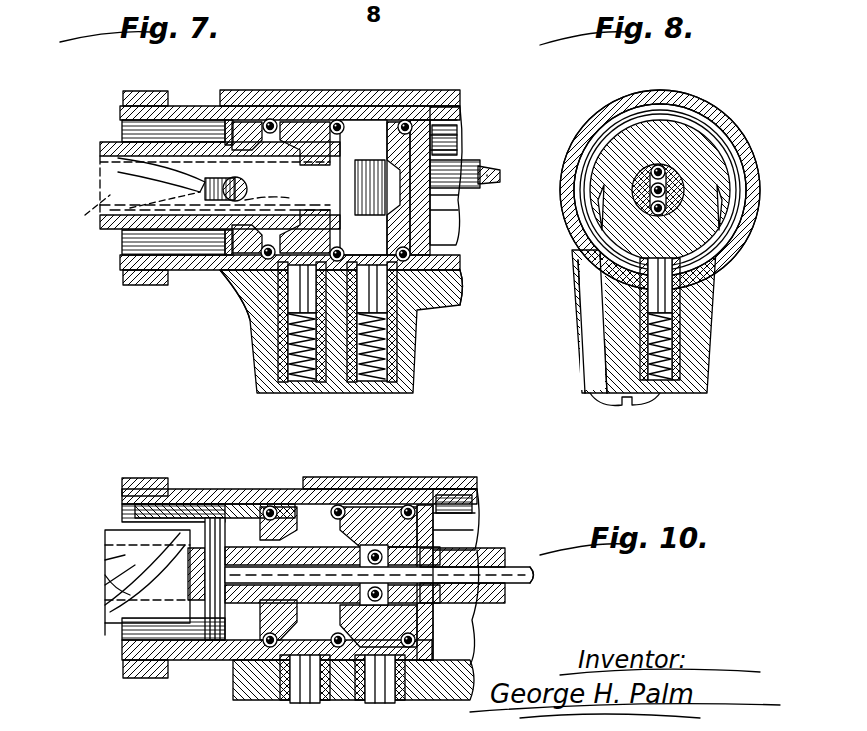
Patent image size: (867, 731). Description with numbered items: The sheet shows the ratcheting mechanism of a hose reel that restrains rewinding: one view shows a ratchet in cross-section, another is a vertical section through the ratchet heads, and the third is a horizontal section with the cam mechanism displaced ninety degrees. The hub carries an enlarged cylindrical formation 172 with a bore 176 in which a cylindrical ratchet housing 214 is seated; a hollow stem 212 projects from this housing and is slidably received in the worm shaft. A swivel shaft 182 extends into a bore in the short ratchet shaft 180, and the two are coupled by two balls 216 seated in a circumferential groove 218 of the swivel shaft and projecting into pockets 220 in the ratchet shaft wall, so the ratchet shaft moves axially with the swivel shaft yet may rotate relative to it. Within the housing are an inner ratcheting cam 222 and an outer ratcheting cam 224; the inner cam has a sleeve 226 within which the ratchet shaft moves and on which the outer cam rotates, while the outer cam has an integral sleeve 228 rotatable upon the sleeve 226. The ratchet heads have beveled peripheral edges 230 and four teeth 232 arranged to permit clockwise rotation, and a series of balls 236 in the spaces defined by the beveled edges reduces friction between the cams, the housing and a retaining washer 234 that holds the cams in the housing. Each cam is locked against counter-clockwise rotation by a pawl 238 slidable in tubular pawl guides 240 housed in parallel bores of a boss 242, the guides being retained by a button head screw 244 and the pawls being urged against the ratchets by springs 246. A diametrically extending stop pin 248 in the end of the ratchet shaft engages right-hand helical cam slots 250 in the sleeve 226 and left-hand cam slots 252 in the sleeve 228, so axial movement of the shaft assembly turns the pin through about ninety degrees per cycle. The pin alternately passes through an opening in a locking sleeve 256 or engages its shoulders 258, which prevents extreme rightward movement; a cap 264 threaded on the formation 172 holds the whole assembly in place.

In FIG. 8, the cylindrical boss or formation 172 is at (640, 97).
In FIG. 10, the cylindrical boss or formation 172 is at (455, 495).
In FIG. 7, the bore 176 is at (462, 120).
In FIG. 10, the bore 176 is at (478, 490).
In FIG. 8, the ratchet shaft 180 is at (705, 235).
In FIG. 10, the ratchet shaft 180 is at (188, 588).
In FIG. 7, the swivel shaft 182 is at (487, 185).
In FIG. 8, the swivel shaft 182 is at (668, 178).
In FIG. 10, the swivel shaft 182 is at (540, 568).
In FIG. 7, the hollow stem 212 is at (470, 172).
In FIG. 10, the hollow stem 212 is at (470, 552).
In FIG. 7, the ratchet housing 214 is at (460, 138).
In FIG. 8, the ratchet housing 214 is at (705, 125).
In FIG. 10, the ratchet housing 214 is at (475, 505).
In FIG. 8, the balls 216 is at (680, 200).
In FIG. 10, the balls 216 is at (460, 530).
In FIG. 10, the circumferential groove 218 is at (395, 575).
In FIG. 8, the pockets 220 is at (658, 165).
In FIG. 10, the pockets 220 is at (360, 570).
In FIG. 7, the inner ratcheting cam 222 is at (372, 128).
In FIG. 8, the inner ratcheting cam 222 is at (590, 240).
In FIG. 10, the inner ratcheting cam 222 is at (370, 510).
In FIG. 7, the outer ratcheting cam 224 is at (335, 120).
In FIG. 10, the outer ratcheting cam 224 is at (300, 490).
In FIG. 7, the sleeve 226 is at (215, 189).
In FIG. 10, the sleeve 226 is at (275, 690).
In FIG. 7, the sleeve 228 is at (170, 140).
In FIG. 10, the sleeve 228 is at (110, 558).
In FIG. 7, the beveled peripheral edges 230 is at (300, 105).
In FIG. 10, the beveled peripheral edges 230 is at (350, 489).
In FIG. 8, the teeth 232 is at (590, 170).
In FIG. 7, the retaining washer 234 is at (210, 280).
In FIG. 10, the retaining washer 234 is at (240, 688).
In FIG. 7, the balls 236 is at (246, 310).
In FIG. 10, the balls 236 is at (440, 640).
In FIG. 7, the pawl 238 is at (258, 360).
In FIG. 8, the pawl 238 is at (675, 292).
In FIG. 10, the pawl 238 is at (375, 703).
In FIG. 7, the tubular pawl guides 240 is at (400, 385).
In FIG. 8, the tubular pawl guides 240 is at (685, 330).
In FIG. 7, the boss 242 is at (413, 376).
In FIG. 8, the boss 242 is at (712, 350).
In FIG. 10, the boss 242 is at (450, 690).
In FIG. 8, the button head screw 244 is at (635, 415).
In FIG. 7, the springs 246 is at (302, 380).
In FIG. 8, the springs 246 is at (665, 380).
In FIG. 7, the stop member or pin 248 is at (245, 188).
In FIG. 10, the stop member or pin 248 is at (130, 615).
In FIG. 7, the right-hand helical cam slots 250 is at (130, 180).
In FIG. 10, the left-hand helical cam slots 252 is at (105, 591).
In FIG. 7, the locking sleeve 256 is at (122, 127).
In FIG. 10, the locking sleeve 256 is at (122, 512).
In FIG. 7, the shoulders or abutments 258 is at (225, 242).
In FIG. 10, the shoulders or abutments 258 is at (205, 640).
In FIG. 10, the cap 264 is at (122, 485).